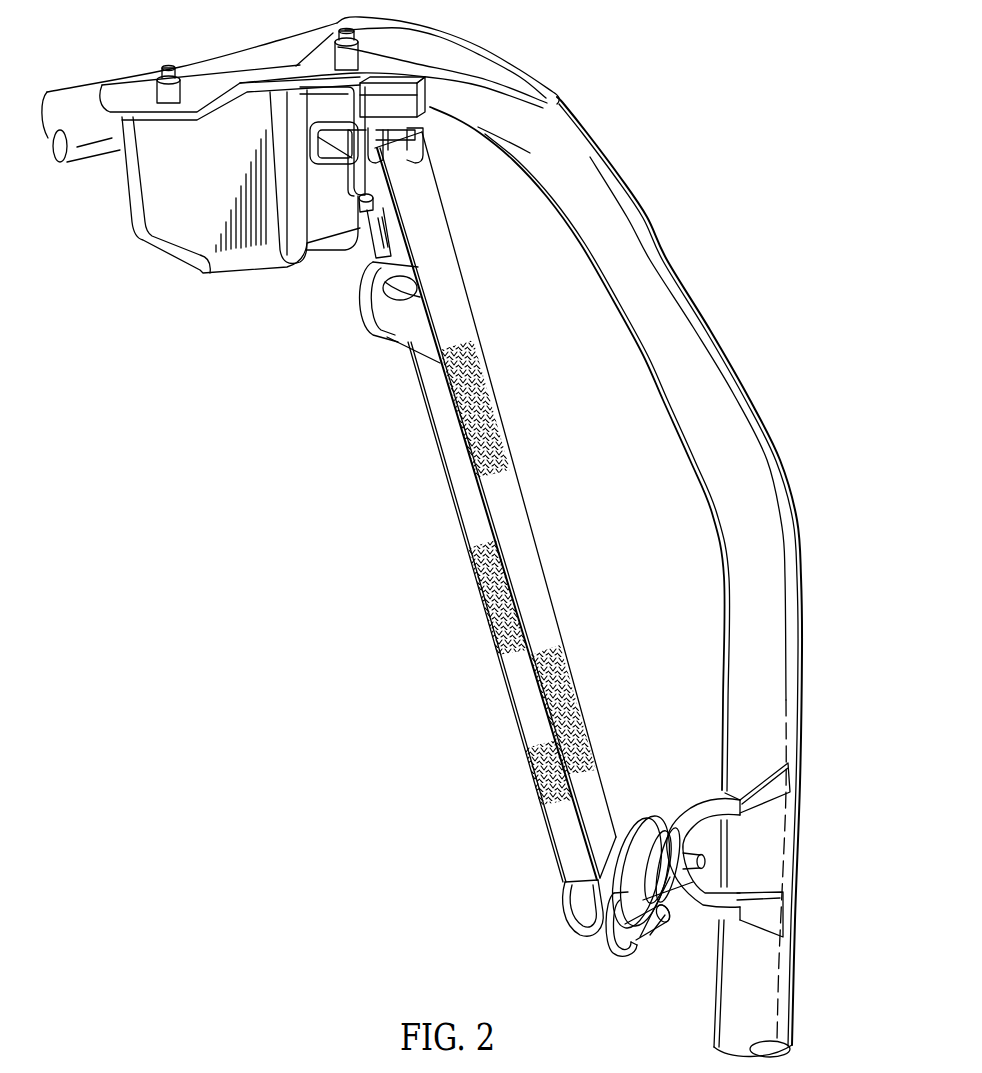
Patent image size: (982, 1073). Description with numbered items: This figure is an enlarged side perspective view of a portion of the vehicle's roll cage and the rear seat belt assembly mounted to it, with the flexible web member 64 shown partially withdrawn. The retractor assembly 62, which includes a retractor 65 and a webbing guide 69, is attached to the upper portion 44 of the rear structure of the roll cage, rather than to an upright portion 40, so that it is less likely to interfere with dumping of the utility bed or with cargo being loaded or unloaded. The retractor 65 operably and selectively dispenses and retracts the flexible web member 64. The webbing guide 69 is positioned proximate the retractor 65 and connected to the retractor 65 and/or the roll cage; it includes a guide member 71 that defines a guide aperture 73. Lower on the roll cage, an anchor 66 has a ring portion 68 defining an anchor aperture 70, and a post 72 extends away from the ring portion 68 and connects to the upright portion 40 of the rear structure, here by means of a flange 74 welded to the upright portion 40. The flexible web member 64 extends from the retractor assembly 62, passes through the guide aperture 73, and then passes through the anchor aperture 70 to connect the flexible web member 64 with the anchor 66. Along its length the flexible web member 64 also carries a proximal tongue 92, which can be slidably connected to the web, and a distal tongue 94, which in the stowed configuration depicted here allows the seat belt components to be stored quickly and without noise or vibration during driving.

The upright portion 40 is at (805, 686).
The upper portion 44 is at (91, 83).
The retractor assembly 62 is at (230, 197).
The flexible web member 64 is at (434, 515).
The retractor 65 is at (155, 262).
The anchor 66 is at (673, 886).
The ring portion 68 is at (607, 947).
The webbing guide 69 is at (397, 167).
The anchor aperture 70 is at (641, 947).
The guide member 71 is at (423, 118).
The post 72 is at (701, 842).
The guide aperture 73 is at (410, 136).
The flange 74 is at (687, 907).
The proximal tongue 92 is at (550, 912).
The distal tongue 94 is at (347, 305).